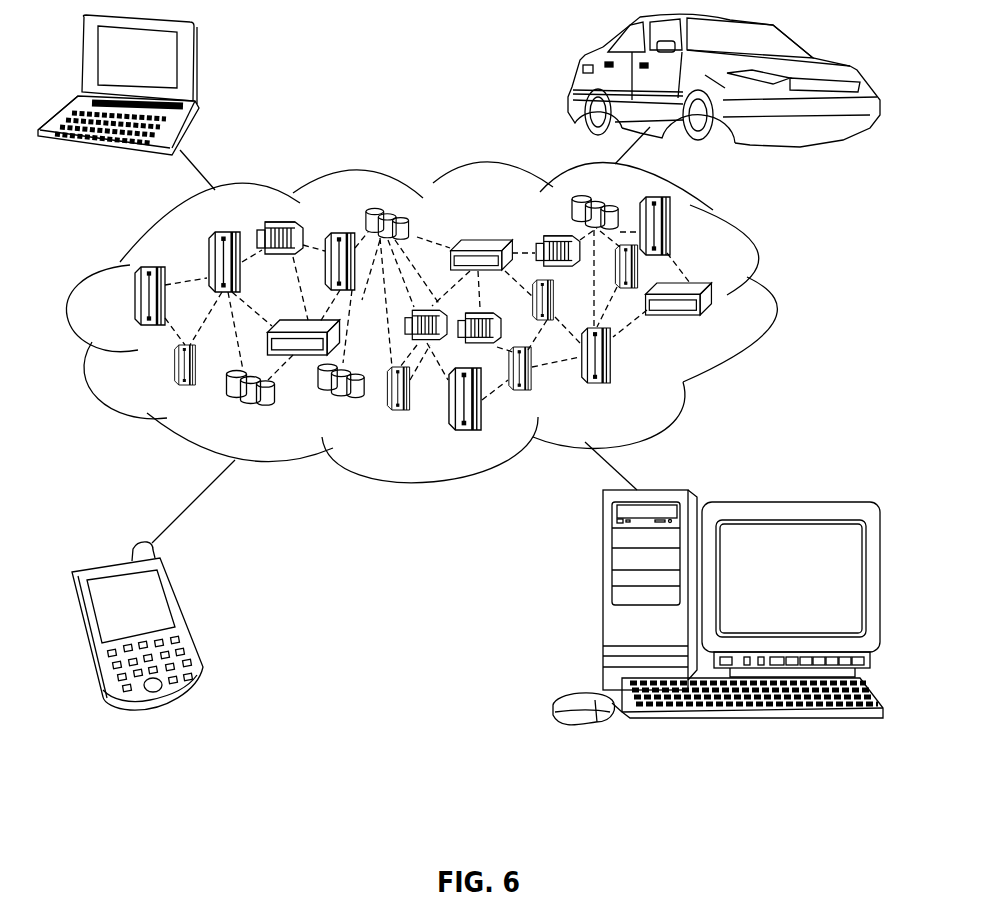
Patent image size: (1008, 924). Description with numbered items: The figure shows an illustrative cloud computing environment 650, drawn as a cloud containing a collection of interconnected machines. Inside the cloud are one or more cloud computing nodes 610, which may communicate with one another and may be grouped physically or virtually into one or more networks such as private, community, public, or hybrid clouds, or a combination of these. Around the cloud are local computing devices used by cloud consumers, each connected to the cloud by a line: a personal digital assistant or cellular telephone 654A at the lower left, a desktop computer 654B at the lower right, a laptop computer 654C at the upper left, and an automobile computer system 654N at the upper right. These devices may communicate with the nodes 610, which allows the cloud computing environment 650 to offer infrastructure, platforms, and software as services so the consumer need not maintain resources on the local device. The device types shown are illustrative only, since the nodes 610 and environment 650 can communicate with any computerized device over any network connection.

The cloud computing nodes 610 is at (747, 323).
The cloud computing environment 650 is at (757, 261).
The personal digital assistant or cellular telephone 654A is at (185, 617).
The desktop computer 654B is at (603, 602).
The laptop computer 654C is at (194, 65).
The automobile computer system 654N is at (572, 70).